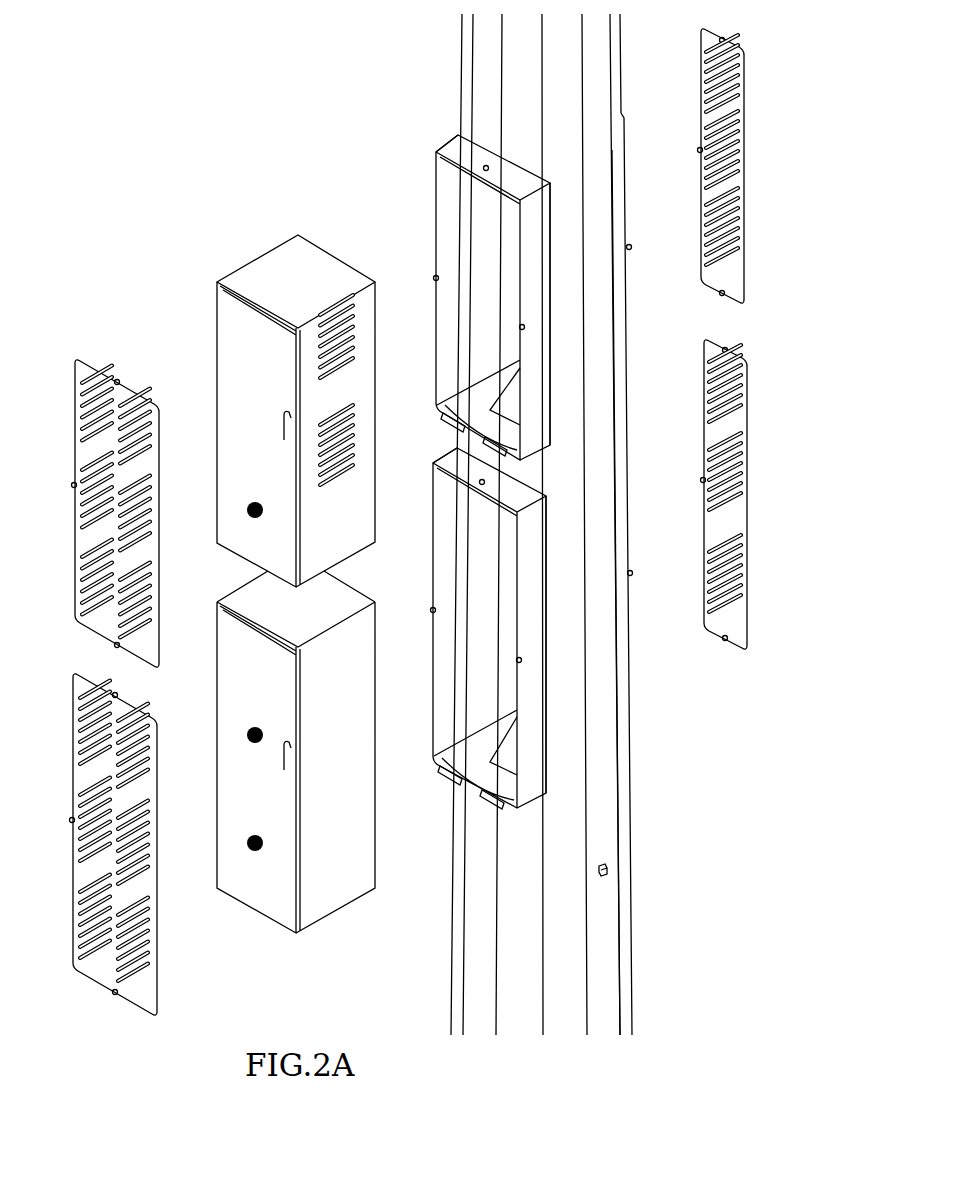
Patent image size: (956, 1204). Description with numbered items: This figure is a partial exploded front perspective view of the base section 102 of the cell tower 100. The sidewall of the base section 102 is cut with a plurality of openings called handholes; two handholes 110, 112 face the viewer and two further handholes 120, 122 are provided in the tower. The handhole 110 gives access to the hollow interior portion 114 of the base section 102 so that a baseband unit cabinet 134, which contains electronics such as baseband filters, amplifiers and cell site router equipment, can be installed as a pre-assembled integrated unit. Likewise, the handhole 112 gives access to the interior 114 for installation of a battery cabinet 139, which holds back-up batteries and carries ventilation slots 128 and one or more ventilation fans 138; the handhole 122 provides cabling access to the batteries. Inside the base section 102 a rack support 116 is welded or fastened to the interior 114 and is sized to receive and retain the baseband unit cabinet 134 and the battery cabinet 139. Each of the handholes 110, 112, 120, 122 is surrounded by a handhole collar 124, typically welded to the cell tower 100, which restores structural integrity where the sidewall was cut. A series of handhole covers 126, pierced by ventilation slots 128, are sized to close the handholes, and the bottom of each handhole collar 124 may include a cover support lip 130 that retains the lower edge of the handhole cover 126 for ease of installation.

The cell tower 100 is at (205, 95).
The base section 102 is at (632, 910).
The handhole 110 is at (430, 246).
The handhole 112 is at (430, 590).
The hollow interior portion 114 is at (480, 202).
The rack support 116 is at (480, 402).
The handhole 120 is at (640, 190).
The handhole 122 is at (643, 505).
The handhole collar 124 is at (460, 140).
The handhole cover 126 is at (75, 870).
The ventilation slot 128 is at (348, 306).
The cover support lip 130 is at (446, 424).
The baseband unit cabinet 134 is at (248, 268).
The ventilation fan 138 is at (250, 515).
The battery cabinet 139 is at (340, 913).